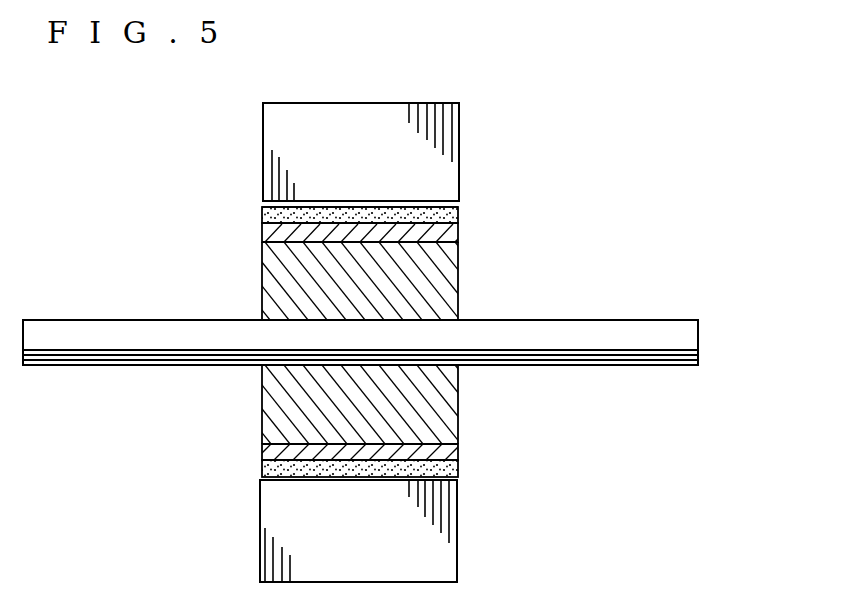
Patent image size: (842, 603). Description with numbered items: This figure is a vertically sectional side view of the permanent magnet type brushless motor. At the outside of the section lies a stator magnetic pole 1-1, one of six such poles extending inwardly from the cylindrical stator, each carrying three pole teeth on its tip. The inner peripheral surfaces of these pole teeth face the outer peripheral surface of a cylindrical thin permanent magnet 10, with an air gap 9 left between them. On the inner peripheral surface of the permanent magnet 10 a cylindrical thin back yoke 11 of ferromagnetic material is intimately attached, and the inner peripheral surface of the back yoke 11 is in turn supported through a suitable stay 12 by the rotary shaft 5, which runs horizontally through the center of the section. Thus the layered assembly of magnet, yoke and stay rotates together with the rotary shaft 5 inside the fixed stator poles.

The stator magnetic pole 1-1 is at (461, 154).
The rotary shaft 5 is at (95, 365).
The air gap 9 is at (260, 203).
The permanent magnet 10 is at (461, 213).
The back yoke 11 is at (461, 235).
The stay 12 is at (461, 282).